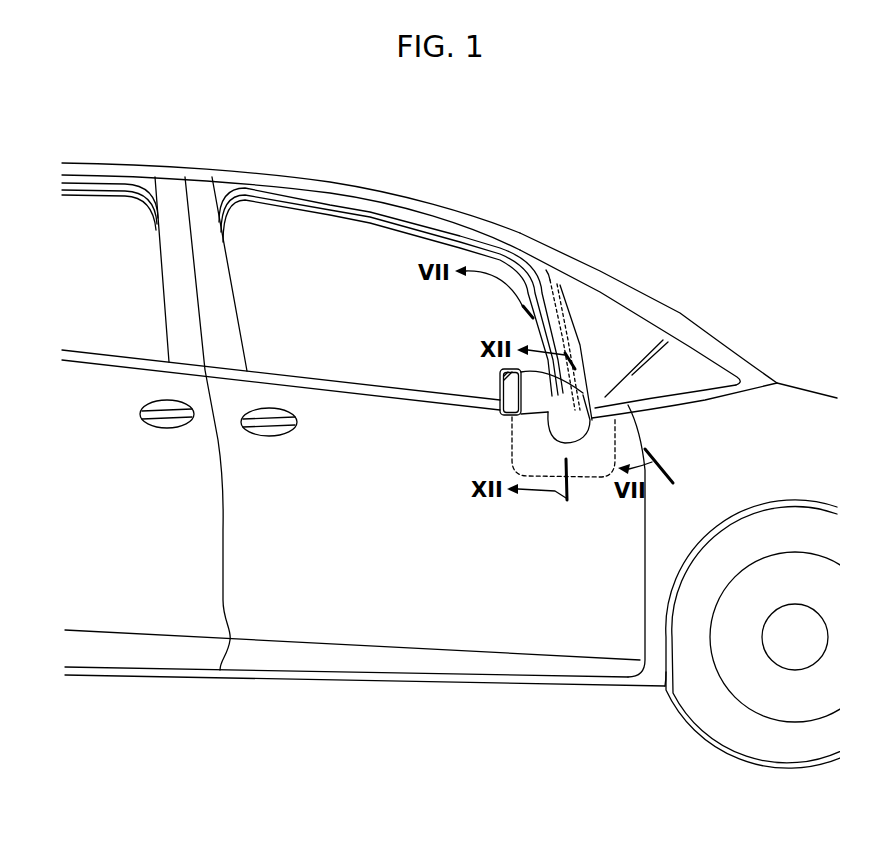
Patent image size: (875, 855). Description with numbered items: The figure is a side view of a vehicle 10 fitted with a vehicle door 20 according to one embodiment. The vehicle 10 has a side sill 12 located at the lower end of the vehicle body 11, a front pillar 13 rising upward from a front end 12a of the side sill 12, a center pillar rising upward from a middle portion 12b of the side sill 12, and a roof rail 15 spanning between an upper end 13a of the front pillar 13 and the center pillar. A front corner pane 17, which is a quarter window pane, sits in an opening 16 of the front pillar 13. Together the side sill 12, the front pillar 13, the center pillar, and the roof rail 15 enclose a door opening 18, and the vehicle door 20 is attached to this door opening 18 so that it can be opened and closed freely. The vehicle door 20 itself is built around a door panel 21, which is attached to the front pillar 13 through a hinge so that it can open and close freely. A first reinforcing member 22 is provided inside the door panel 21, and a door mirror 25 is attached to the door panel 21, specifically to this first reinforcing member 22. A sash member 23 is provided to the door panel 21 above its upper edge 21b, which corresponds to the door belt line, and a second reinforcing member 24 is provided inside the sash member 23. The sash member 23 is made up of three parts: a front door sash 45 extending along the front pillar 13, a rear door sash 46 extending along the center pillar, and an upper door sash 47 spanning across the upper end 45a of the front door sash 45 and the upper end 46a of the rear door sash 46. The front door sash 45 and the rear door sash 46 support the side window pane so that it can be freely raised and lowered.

The vehicle 10 is at (627, 205).
The vehicle body 11 is at (387, 188).
The side sill 12 is at (382, 678).
The front end of side sill 12a is at (621, 686).
The middle portion of side sill 12b is at (240, 671).
The front pillar 13 is at (645, 303).
The upper end of front pillar 13a is at (543, 252).
The roof rail 15 is at (330, 182).
The opening of front pillar 16 is at (643, 330).
The front corner pane 17 is at (683, 368).
The door opening 18 is at (268, 205).
The vehicle door 20 is at (208, 444).
The door panel 21 is at (240, 527).
The upper edge of door panel 21b is at (342, 387).
The first reinforcing member 22 is at (510, 442).
The sash member 23 is at (463, 233).
The second reinforcing member 24 is at (565, 348).
The door mirror 25 is at (500, 390).
The front door sash 45 is at (577, 335).
The upper end of front door sash 45a is at (552, 275).
The rear door sash 46 is at (210, 272).
The upper end of rear door sash 46a is at (202, 192).
The upper door sash 47 is at (385, 213).